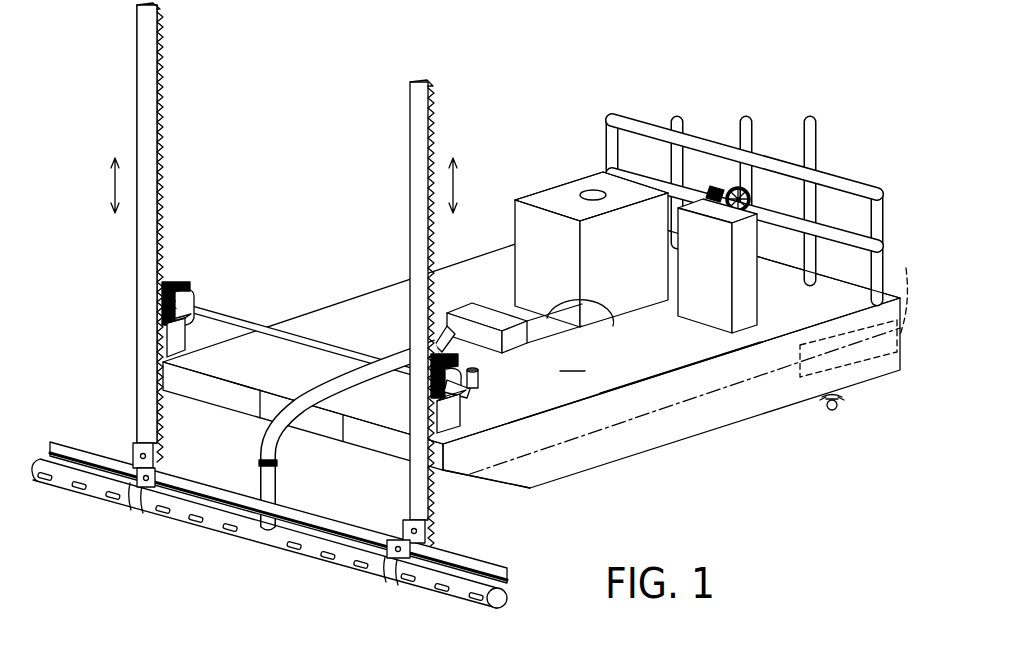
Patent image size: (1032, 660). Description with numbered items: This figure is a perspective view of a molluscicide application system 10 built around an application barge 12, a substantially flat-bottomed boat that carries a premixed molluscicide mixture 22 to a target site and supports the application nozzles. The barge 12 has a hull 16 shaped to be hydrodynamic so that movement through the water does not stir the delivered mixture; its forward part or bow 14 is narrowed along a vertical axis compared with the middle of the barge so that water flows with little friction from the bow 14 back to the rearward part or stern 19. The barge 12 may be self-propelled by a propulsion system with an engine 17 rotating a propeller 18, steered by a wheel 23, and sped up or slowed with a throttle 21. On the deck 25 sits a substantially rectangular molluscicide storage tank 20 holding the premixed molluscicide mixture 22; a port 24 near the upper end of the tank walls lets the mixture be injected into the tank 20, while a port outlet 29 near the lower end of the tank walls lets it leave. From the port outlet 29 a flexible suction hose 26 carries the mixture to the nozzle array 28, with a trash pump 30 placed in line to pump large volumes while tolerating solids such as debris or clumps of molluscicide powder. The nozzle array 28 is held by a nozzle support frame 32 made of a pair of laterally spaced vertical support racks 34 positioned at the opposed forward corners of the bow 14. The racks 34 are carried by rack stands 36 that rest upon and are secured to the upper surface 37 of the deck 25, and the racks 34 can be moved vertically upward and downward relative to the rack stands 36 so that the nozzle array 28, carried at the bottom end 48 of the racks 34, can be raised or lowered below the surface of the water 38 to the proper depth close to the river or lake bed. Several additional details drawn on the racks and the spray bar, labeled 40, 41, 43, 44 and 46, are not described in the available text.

The molluscicide application system 10 is at (477, 317).
The application barge 12 is at (768, 400).
The bow 14 is at (478, 457).
The hull 16 is at (689, 413).
The engine 17 is at (907, 288).
The propeller 18 is at (838, 410).
The stern 19 is at (886, 355).
The molluscicide storage tank 20 is at (545, 193).
The throttle 21 is at (718, 193).
The premixed molluscicide mixture 22 is at (630, 222).
The wheel 23 is at (755, 203).
The port 24 is at (592, 190).
The deck 25 is at (385, 302).
The suction hose 26 is at (402, 352).
The nozzle array 28 is at (405, 602).
The port outlet 29 is at (613, 322).
The trash pump 30 is at (478, 312).
The nozzle support frame 32 is at (113, 95).
The vertical support racks 34 is at (150, 37).
The rack stands 36 is at (182, 337).
The upper surface 37 is at (571, 360).
The surface of the water 38 is at (627, 422).
The clamp assembly 40 is at (182, 268).
The rack teeth 41 is at (160, 118).
The pawl 43 is at (166, 300).
The fitting 44 is at (476, 362).
The support rod 46 is at (263, 323).
The bottom end 48 is at (138, 418).